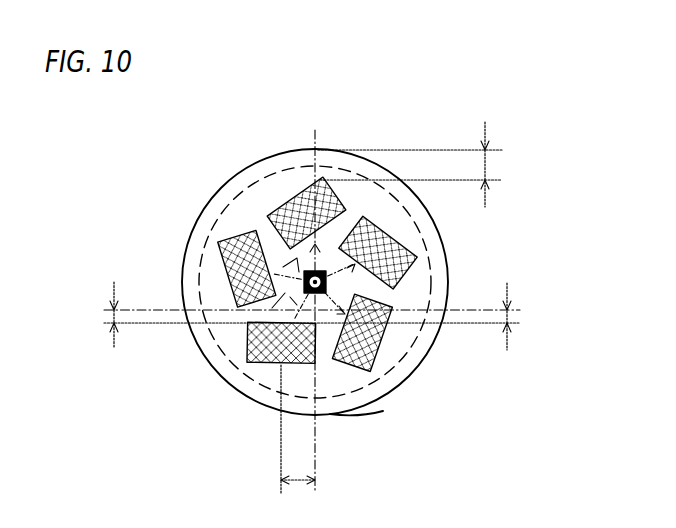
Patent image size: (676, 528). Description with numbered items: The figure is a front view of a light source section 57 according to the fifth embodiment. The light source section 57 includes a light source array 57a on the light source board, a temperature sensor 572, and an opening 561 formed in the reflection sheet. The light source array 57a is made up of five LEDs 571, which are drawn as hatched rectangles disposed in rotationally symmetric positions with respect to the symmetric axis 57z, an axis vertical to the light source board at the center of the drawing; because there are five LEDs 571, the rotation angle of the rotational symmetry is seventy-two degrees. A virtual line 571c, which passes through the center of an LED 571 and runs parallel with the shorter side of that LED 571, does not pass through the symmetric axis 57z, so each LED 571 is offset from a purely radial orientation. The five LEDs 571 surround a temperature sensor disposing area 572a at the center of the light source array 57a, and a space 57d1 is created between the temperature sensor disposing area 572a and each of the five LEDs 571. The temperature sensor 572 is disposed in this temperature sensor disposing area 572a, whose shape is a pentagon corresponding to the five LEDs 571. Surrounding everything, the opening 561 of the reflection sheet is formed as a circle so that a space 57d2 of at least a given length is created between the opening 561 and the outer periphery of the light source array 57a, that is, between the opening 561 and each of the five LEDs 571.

The light source section 57 is at (167, 153).
The light source array 57a is at (273, 173).
The LED 571 is at (218, 246).
The symmetric axis 57z is at (326, 279).
The space 57d1 is at (311, 316).
The space 57d2 is at (438, 164).
The temperature sensor disposing area 572a is at (302, 279).
The temperature sensor 572 is at (307, 291).
The virtual line 571c is at (280, 455).
The opening 561 is at (373, 403).